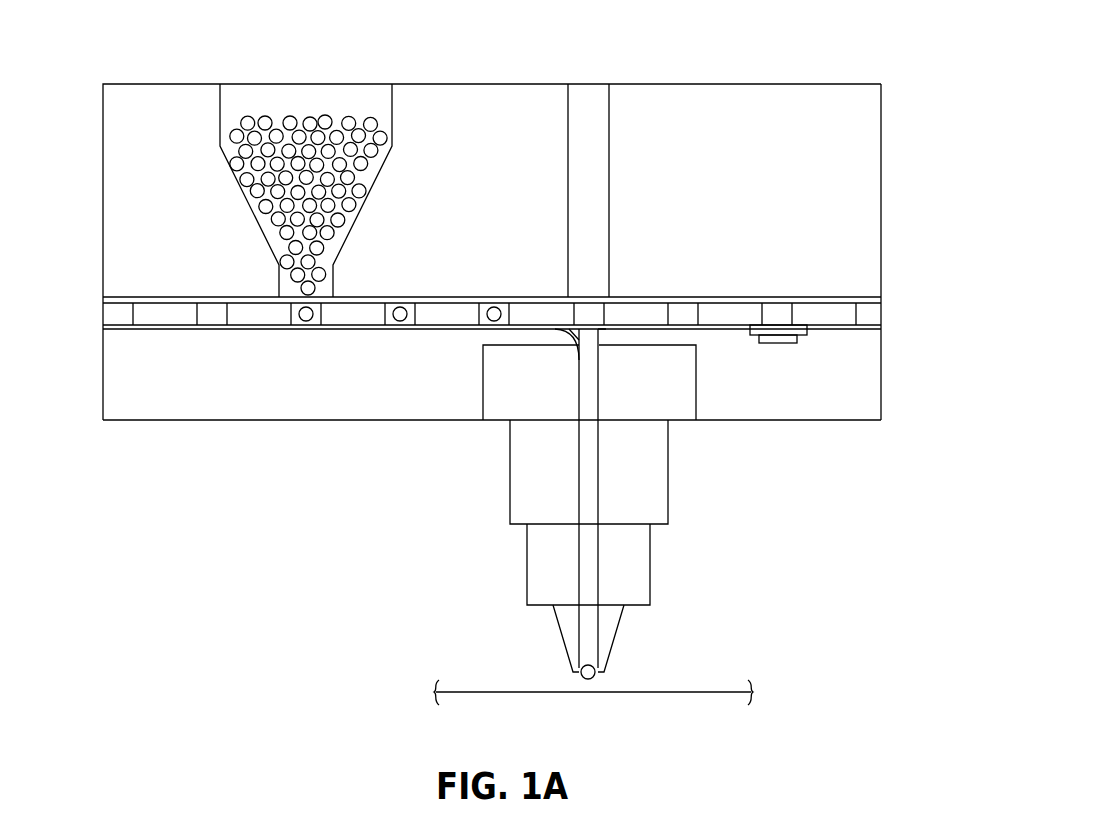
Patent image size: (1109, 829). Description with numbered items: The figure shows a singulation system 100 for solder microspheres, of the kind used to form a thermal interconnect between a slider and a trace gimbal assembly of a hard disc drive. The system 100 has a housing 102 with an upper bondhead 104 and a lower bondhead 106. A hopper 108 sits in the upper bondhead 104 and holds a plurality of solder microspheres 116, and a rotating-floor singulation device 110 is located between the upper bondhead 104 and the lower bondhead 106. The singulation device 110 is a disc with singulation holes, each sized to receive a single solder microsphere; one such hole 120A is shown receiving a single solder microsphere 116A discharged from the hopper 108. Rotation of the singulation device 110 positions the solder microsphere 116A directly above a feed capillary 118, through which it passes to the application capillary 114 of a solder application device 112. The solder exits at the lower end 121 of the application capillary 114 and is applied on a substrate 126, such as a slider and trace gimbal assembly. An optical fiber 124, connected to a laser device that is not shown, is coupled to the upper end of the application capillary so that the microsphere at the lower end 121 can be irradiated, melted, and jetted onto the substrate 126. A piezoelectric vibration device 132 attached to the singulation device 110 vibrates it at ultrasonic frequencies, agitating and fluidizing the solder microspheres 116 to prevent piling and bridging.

The singulation system 100 is at (845, 56).
The housing 102 is at (903, 184).
The upper bondhead 104 is at (737, 110).
The lower bondhead 106 is at (795, 398).
The hopper 108 is at (238, 100).
The singulation device 110 is at (148, 312).
The solder application device 112 is at (693, 452).
The application capillary 114 is at (579, 484).
The solder microsphere 116 is at (323, 125).
The single solder microsphere 116A is at (306, 322).
The feed capillary 118 is at (555, 331).
The singulation hole 120A is at (296, 324).
The lower end of application capillary 121 is at (608, 622).
The optical fiber 124 is at (594, 133).
The substrate 126 is at (735, 686).
The piezoelectric vibration device 132 is at (790, 345).